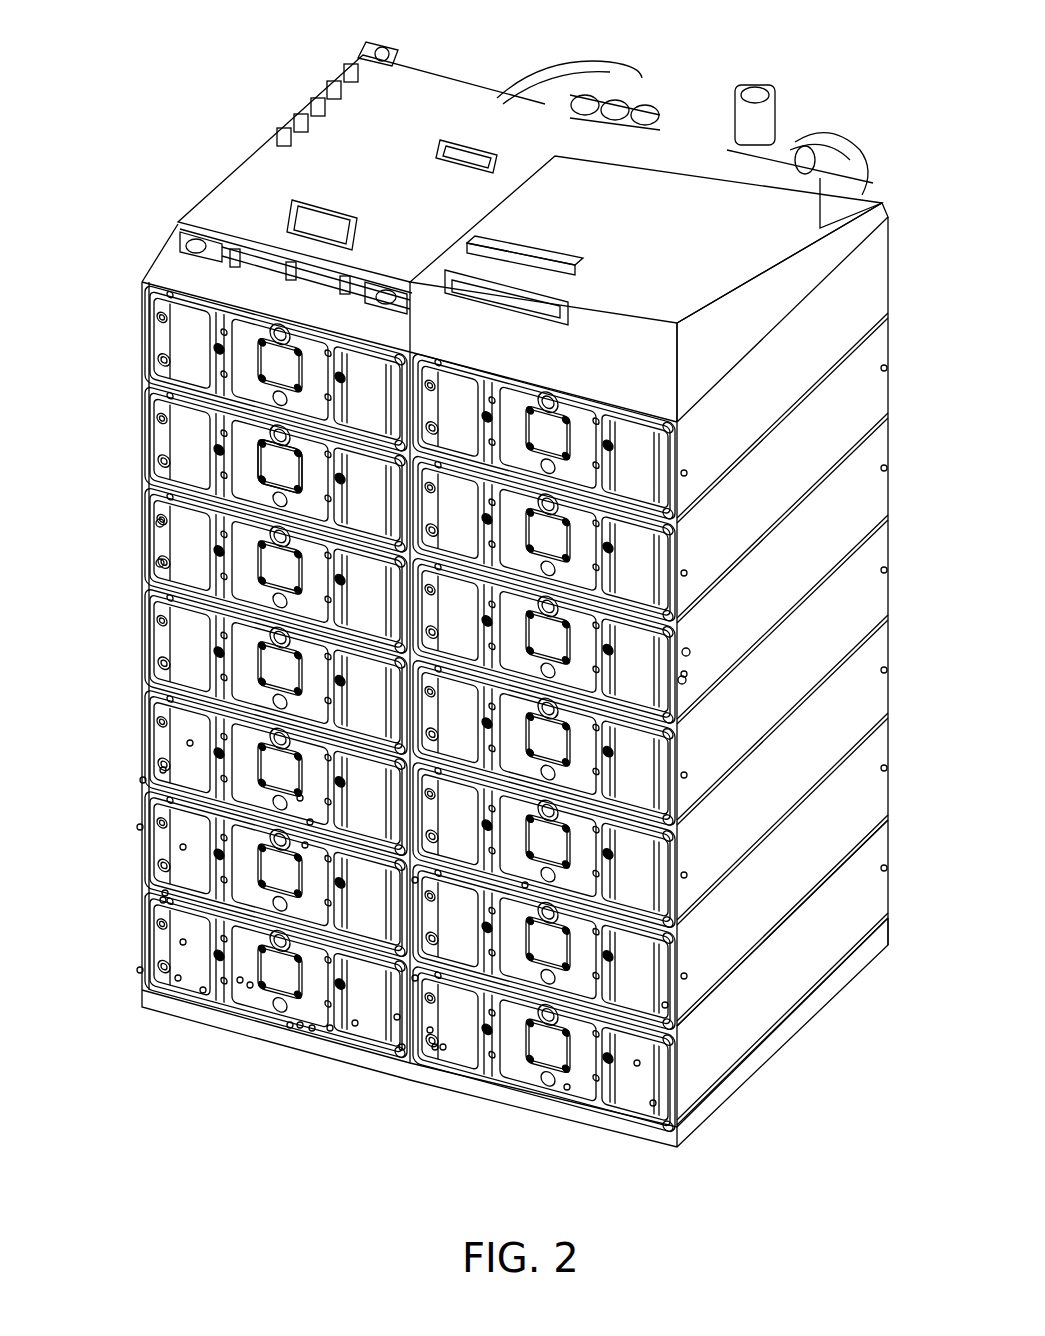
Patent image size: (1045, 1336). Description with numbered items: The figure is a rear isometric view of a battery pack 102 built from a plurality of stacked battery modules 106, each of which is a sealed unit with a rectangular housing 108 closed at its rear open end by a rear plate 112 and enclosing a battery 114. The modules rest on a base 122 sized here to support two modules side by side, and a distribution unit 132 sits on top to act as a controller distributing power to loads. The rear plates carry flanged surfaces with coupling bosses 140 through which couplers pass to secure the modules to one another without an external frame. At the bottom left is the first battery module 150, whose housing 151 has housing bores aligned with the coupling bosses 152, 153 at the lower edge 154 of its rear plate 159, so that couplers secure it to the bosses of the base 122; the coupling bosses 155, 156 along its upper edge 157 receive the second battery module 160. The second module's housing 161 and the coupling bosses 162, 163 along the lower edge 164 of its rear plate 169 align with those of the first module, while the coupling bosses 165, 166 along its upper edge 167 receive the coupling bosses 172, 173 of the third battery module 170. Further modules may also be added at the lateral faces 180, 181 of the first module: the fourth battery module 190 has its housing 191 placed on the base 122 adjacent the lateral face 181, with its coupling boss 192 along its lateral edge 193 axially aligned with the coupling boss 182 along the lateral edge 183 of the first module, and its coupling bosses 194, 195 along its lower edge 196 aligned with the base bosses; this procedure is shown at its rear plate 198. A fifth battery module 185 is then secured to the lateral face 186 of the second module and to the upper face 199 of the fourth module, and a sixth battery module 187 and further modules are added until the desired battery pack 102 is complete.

The battery pack 102 is at (826, 70).
The battery module 106 is at (875, 390).
The housing 108 is at (878, 493).
The rear plate 112 is at (277, 465).
The battery 114 is at (875, 585).
The base 122 is at (750, 1067).
The distribution unit 132 is at (258, 126).
The coupling boss 140 is at (160, 563).
The first battery module 150 is at (183, 942).
The housing 151 is at (300, 1025).
The coupling boss 152 is at (178, 978).
The coupling boss 153 is at (430, 1030).
The lower edge 154 is at (290, 1025).
The coupling boss 155 is at (163, 900).
The coupling boss 156 is at (330, 1028).
The upper edge 157 is at (250, 985).
The rear plate 159 is at (240, 980).
The second battery module 160 is at (183, 847).
The housing 161 is at (140, 827).
The coupling boss 162 is at (165, 893).
The coupling boss 163 is at (415, 880).
The lower edge 164 is at (312, 1028).
The coupling boss 165 is at (310, 822).
The coupling boss 166 is at (305, 845).
The upper edge 167 is at (143, 780).
The rear plate 169 is at (203, 990).
The third battery module 170 is at (190, 743).
The coupling boss 172 is at (163, 770).
The coupling boss 173 is at (300, 798).
The lateral face 180 is at (140, 970).
The lateral face 181 is at (402, 1047).
The coupling boss 182 is at (355, 1023).
The lateral edge 183 is at (397, 1017).
The fifth battery module 185 is at (870, 803).
The lateral face 186 is at (525, 885).
The sixth battery module 187 is at (868, 705).
The fourth battery module 190 is at (875, 895).
The housing 191 is at (838, 947).
The coupling boss 192 is at (435, 1047).
The lateral edge 193 is at (415, 978).
The coupling boss 194 is at (443, 1047).
The coupling boss 195 is at (653, 1103).
The lower edge 196 is at (567, 1087).
The rear plate 198 is at (637, 1063).
The upper face 199 is at (665, 1005).